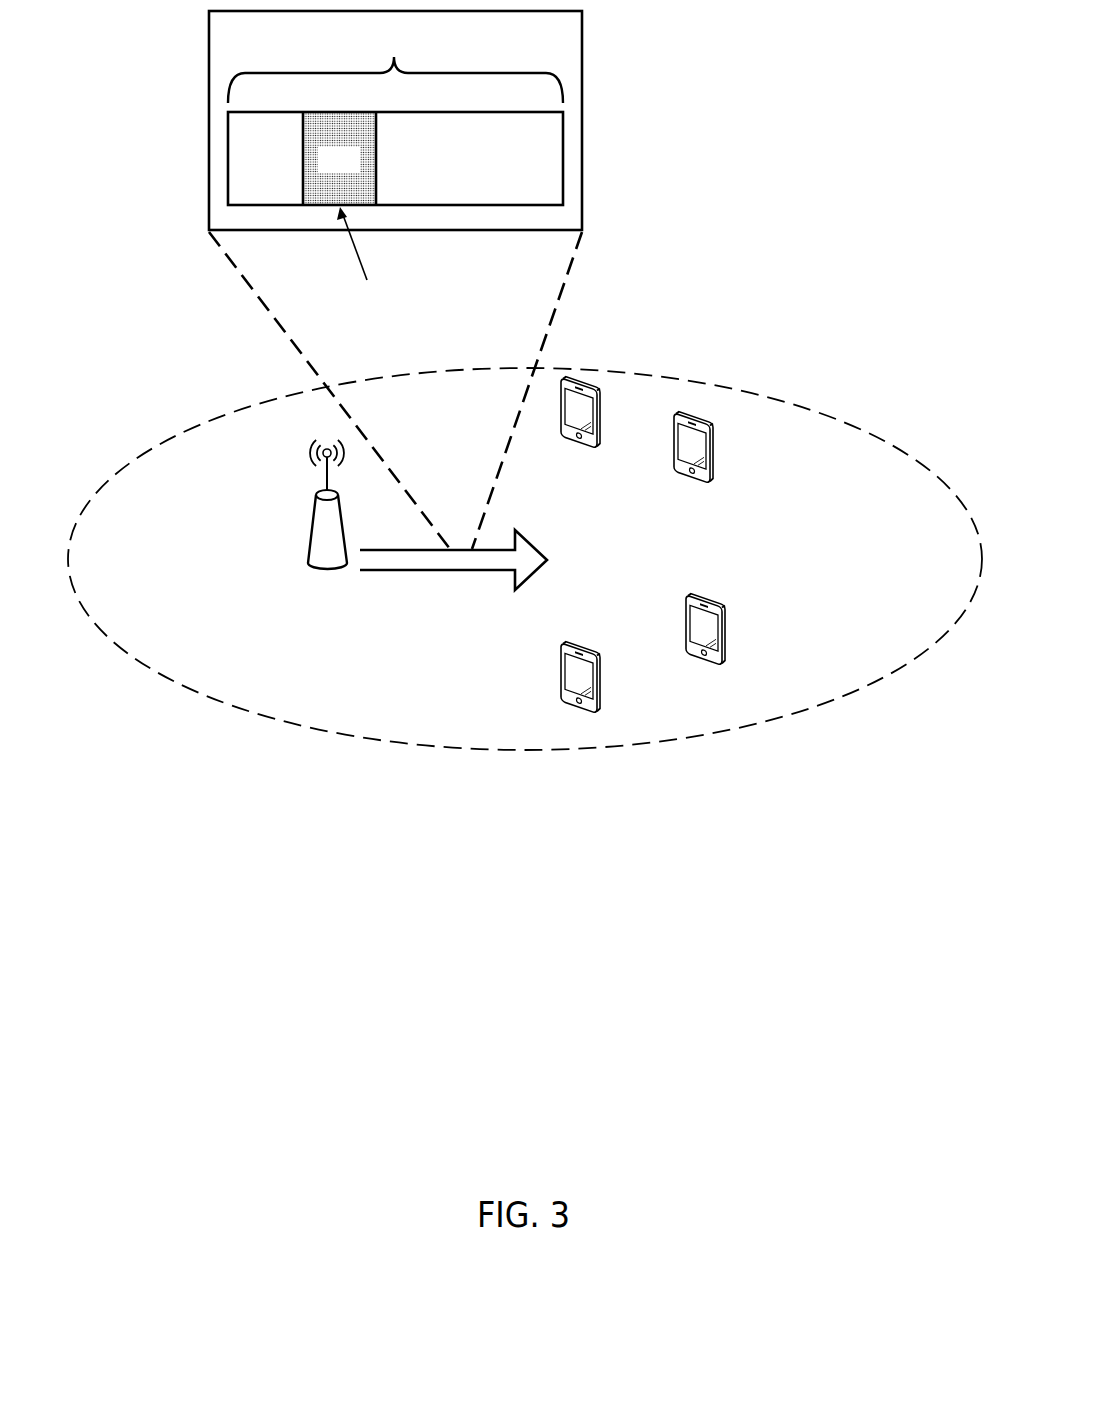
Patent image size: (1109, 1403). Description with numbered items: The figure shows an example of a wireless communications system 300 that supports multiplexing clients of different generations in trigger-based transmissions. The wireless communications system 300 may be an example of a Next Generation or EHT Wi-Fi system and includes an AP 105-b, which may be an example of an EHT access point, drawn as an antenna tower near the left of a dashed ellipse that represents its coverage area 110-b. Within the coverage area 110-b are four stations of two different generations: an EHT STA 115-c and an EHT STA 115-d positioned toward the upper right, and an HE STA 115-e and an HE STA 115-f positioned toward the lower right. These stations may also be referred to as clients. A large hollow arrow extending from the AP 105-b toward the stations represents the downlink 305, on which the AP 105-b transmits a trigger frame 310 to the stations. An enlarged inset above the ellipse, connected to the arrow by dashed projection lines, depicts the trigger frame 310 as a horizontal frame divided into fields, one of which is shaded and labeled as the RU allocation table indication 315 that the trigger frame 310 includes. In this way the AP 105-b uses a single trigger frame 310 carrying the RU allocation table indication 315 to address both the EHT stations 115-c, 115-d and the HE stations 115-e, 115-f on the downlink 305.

The wireless communications system 300 is at (853, 1148).
The downlink 305 is at (443, 572).
The trigger frame 310 is at (491, 47).
The RU allocation table indication 315 is at (357, 170).
The AP 105-b is at (320, 570).
The coverage area 110-b is at (408, 742).
The EHT STA 115-c is at (563, 442).
The EHT STA 115-d is at (677, 478).
The HE STA 115-e is at (602, 648).
The HE STA 115-f is at (725, 605).